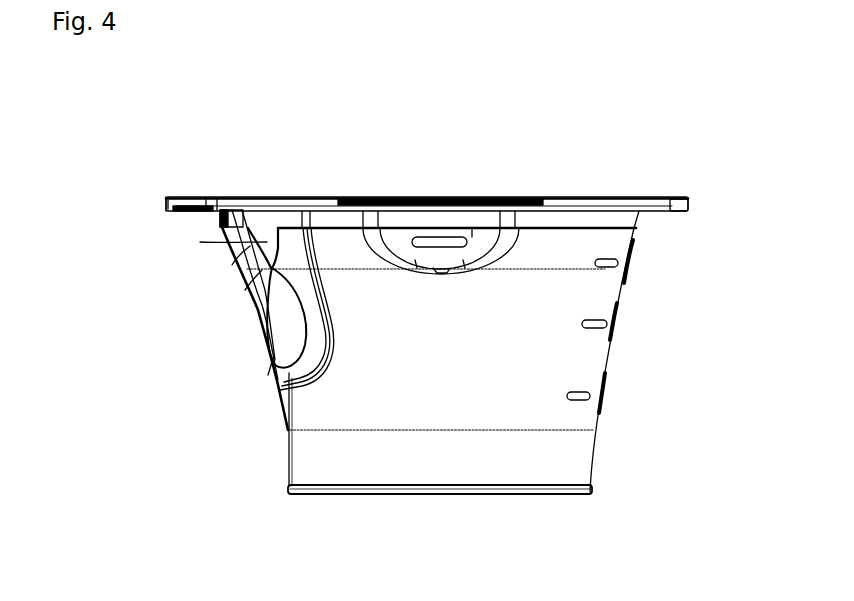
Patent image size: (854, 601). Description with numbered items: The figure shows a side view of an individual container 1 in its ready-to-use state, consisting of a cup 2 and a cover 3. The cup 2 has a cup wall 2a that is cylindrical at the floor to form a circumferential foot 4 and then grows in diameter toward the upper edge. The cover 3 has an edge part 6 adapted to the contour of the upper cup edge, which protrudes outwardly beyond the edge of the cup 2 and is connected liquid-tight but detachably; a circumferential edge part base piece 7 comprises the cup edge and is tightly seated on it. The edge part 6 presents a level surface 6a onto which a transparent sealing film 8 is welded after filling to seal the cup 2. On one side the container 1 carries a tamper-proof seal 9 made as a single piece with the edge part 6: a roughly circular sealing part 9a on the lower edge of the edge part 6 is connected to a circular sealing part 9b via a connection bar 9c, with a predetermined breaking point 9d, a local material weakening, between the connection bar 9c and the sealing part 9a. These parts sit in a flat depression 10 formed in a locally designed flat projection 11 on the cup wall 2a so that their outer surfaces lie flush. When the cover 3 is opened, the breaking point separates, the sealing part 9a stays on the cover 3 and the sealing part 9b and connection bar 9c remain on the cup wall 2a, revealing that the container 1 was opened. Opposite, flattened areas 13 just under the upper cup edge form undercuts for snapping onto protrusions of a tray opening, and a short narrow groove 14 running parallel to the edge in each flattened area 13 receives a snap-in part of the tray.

The individual container 1 is at (702, 168).
The cup 2 is at (648, 288).
The cup wall 2a is at (603, 353).
The cover 3 is at (571, 192).
The circumferential foot 4 is at (592, 485).
The edge part 6 is at (166, 203).
The level surface 6a is at (197, 197).
The edge part base piece 7 is at (217, 229).
The sealing film 8 is at (308, 197).
The tamper-proof seal 9 is at (243, 370).
The sealing part 9a is at (267, 242).
The sealing part 9b is at (268, 375).
The connection bar 9c is at (245, 290).
The predetermined breaking point 9d is at (232, 265).
The flat depression 10 is at (278, 342).
The flat projection 11 is at (335, 350).
The flattened area 13 is at (475, 238).
The groove 14 is at (412, 238).